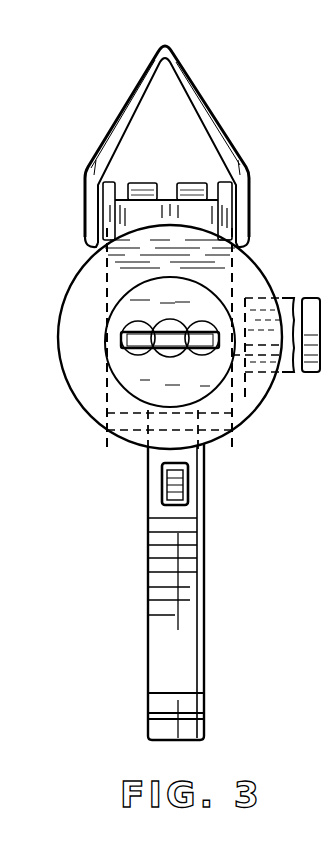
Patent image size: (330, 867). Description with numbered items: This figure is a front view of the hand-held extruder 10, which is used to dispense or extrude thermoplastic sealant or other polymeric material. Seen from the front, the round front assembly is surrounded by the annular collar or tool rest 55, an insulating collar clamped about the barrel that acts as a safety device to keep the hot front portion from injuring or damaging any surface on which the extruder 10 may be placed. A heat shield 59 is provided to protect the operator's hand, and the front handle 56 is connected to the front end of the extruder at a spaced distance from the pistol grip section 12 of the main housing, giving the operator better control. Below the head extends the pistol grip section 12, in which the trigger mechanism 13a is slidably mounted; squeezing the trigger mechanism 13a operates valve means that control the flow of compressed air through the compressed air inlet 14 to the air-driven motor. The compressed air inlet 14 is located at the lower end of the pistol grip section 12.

The hand-held extruder 10 is at (257, 214).
The annular collar or tool rest 55 is at (95, 300).
The heat shield 59 is at (245, 283).
The front handle 56 is at (284, 374).
The pistol grip section 12 is at (189, 626).
The trigger mechanism 13a is at (162, 491).
The compressed air inlet 14 is at (158, 730).